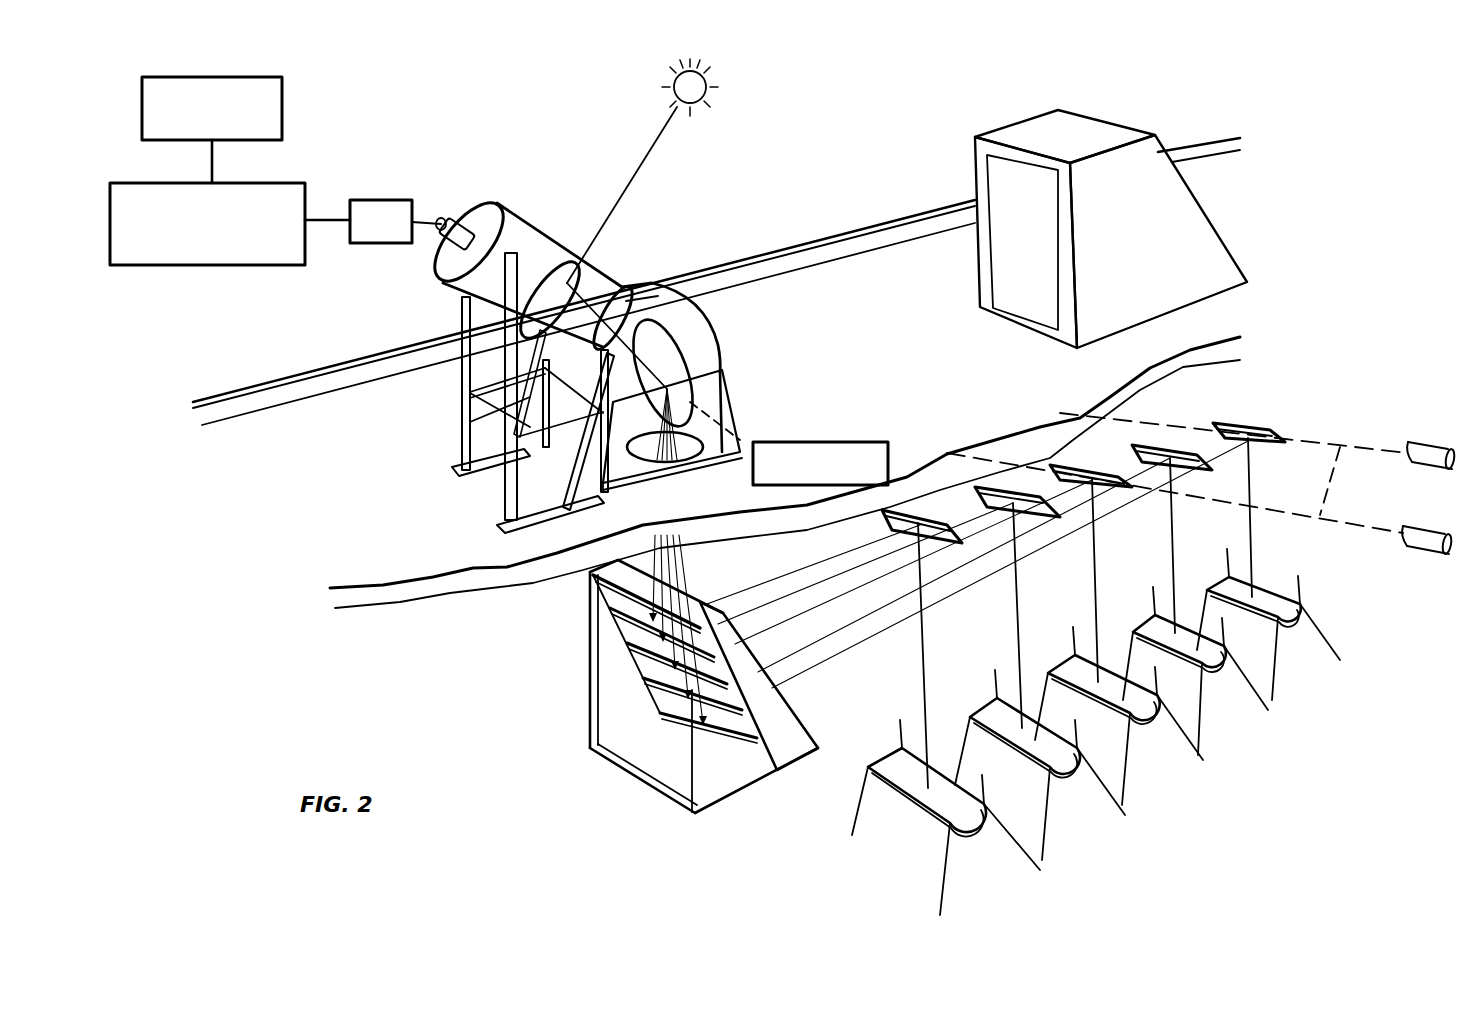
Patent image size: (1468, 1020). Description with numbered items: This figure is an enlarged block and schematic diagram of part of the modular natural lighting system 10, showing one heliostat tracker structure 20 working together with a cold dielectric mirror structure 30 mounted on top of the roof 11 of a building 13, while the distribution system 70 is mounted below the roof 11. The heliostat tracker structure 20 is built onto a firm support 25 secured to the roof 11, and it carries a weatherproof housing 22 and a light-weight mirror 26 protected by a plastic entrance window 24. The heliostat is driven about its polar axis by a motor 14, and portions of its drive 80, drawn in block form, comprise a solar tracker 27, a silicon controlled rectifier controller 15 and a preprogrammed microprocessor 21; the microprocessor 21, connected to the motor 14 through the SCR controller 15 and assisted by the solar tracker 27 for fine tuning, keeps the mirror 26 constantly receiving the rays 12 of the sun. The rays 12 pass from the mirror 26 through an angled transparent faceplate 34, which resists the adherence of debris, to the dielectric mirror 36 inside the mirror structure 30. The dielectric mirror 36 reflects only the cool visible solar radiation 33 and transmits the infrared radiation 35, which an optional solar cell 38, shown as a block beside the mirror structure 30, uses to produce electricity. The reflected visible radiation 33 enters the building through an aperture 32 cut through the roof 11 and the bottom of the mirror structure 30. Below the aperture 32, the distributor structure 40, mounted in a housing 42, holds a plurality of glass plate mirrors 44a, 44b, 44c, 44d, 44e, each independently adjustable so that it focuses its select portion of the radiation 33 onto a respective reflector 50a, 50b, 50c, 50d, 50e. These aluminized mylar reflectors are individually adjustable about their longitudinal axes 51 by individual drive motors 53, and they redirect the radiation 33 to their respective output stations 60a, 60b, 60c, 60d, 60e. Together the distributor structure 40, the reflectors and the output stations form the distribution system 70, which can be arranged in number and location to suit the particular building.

The modular natural lighting system 10 is at (811, 226).
The roof 11 is at (314, 475).
The rays of the sun 12 is at (632, 172).
The building 13 is at (308, 373).
The motor 14 is at (457, 218).
The silicon controlled rectifier controller 15 is at (386, 200).
The heliostat tracker structure 20 is at (517, 261).
The preprogrammed microprocessor 21 is at (110, 232).
The weatherproof housing 22 is at (456, 296).
The entrance window 24 is at (600, 280).
The support 25 is at (462, 380).
The mirror 26 is at (561, 292).
The solar tracker 27 is at (142, 115).
The cold dielectric mirror structure 30 is at (693, 373).
The aperture 32 is at (645, 443).
The visible solar radiation 33 is at (680, 562).
The transparent faceplate 34 is at (651, 300).
The infrared radiation 35 is at (738, 428).
The dielectric mirror 36 is at (671, 365).
The solar cell 38 is at (753, 472).
The distributor structure 40 is at (655, 686).
The housing 42 is at (672, 772).
The glass plate mirror 44a is at (623, 599).
The glass plate mirror 44b is at (632, 632).
The glass plate mirror 44c is at (642, 656).
The glass plate mirror 44d is at (660, 684).
The glass plate mirror 44e is at (680, 724).
The reflector 50a is at (952, 518).
The reflector 50b is at (1027, 497).
The reflector 50c is at (1110, 472).
The reflector 50d is at (1178, 445).
The reflector 50e is at (1258, 425).
The longitudinal axis 51 is at (1350, 445).
The drive motor 53 is at (1425, 443).
The output station 60a is at (905, 805).
The output station 60b is at (1020, 748).
The output station 60c is at (1108, 698).
The output station 60d is at (1178, 653).
The output station 60e is at (1262, 605).
The distribution system 70 is at (802, 782).
The drive 80 is at (250, 171).